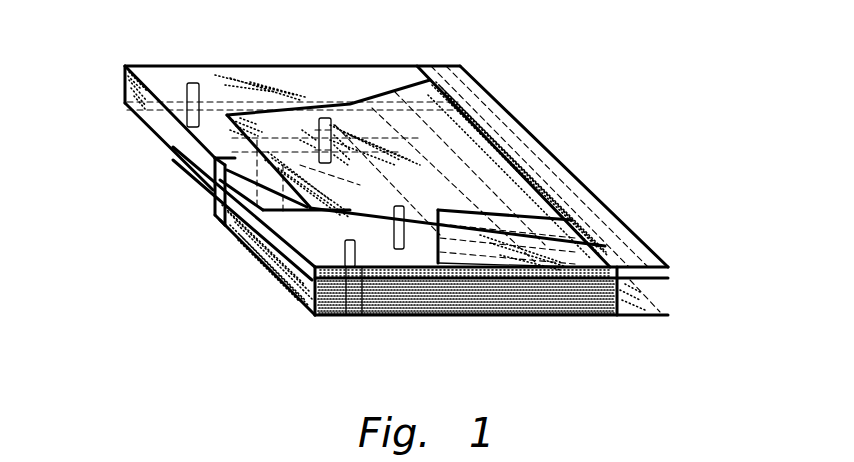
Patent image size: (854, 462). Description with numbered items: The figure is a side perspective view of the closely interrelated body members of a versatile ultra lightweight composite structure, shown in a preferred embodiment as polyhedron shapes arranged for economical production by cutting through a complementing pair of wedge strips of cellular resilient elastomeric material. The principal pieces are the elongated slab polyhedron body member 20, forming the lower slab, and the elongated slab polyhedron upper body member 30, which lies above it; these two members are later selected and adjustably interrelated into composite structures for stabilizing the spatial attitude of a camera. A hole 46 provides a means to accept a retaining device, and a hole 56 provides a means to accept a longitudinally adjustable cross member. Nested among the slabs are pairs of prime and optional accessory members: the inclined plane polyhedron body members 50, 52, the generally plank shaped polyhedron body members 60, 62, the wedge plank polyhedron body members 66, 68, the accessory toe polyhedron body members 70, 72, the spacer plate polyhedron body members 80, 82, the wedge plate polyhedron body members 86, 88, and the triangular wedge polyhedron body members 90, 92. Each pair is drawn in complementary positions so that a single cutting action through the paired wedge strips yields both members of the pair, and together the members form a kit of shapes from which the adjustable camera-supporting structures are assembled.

The elongated slab polyhedron body member 20 is at (364, 260).
The elongated slab polyhedron upper body member 30 is at (492, 131).
The hole 46 is at (329, 115).
The inclined plane polyhedron body member 50 is at (227, 68).
The inclined plane polyhedron body member 52 is at (284, 303).
The hole 56 is at (189, 83).
The generally plank shaped polyhedron body member 60 is at (665, 258).
The generally plank shaped polyhedron body member 62 is at (630, 323).
The wedge plank polyhedron body member 66 is at (137, 128).
The wedge plank polyhedron body member 68 is at (282, 278).
The accessory toe polyhedron body member 70 is at (214, 195).
The accessory toe polyhedron body member 72 is at (207, 153).
The spacer plate polyhedron body member 80 is at (361, 107).
The spacer plate polyhedron body member 82 is at (455, 130).
The wedge plate polyhedron body member 86 is at (189, 188).
The wedge plate polyhedron body member 88 is at (283, 254).
The triangular wedge polyhedron body member 90 is at (437, 80).
The triangular wedge polyhedron body member 92 is at (606, 247).